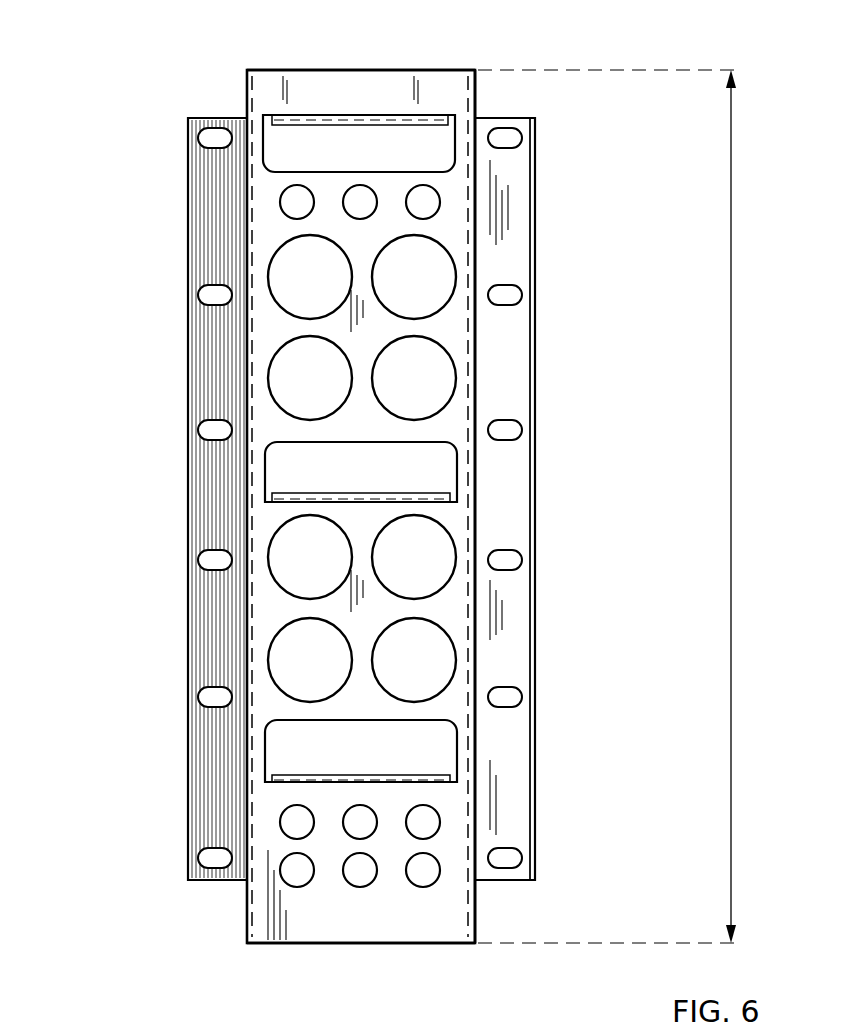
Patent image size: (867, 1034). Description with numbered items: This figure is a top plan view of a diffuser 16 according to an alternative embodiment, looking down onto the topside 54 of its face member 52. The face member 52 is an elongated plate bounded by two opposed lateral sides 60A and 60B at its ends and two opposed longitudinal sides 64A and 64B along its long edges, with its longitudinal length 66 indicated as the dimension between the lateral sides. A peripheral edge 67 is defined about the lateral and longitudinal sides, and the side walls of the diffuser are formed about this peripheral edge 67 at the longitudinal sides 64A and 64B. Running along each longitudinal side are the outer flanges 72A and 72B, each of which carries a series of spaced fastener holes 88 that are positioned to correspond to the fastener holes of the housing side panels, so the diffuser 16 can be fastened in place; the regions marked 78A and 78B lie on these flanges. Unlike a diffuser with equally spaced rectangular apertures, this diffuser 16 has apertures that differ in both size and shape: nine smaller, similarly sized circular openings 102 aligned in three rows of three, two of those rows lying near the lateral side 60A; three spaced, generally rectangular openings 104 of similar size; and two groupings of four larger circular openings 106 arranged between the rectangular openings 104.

The diffuser 16 is at (128, 305).
The face member 52 is at (258, 184).
The topside 54 is at (260, 333).
The lateral side 60A is at (470, 945).
The lateral side 60B is at (420, 70).
The longitudinal side 64A is at (476, 492).
The longitudinal side 64B is at (256, 490).
The longitudinal length 66 is at (608, 506).
The peripheral edge 67 is at (476, 360).
The outer flange 72A is at (523, 393).
The outer flange 72B is at (215, 232).
The first flange inner surface 78A is at (535, 635).
The second flange inner surface 78B is at (200, 641).
The fastener holes 88 is at (212, 138).
The circular openings 102 is at (300, 200).
The rectangular openings 104 is at (352, 158).
The circular openings 106 is at (322, 289).